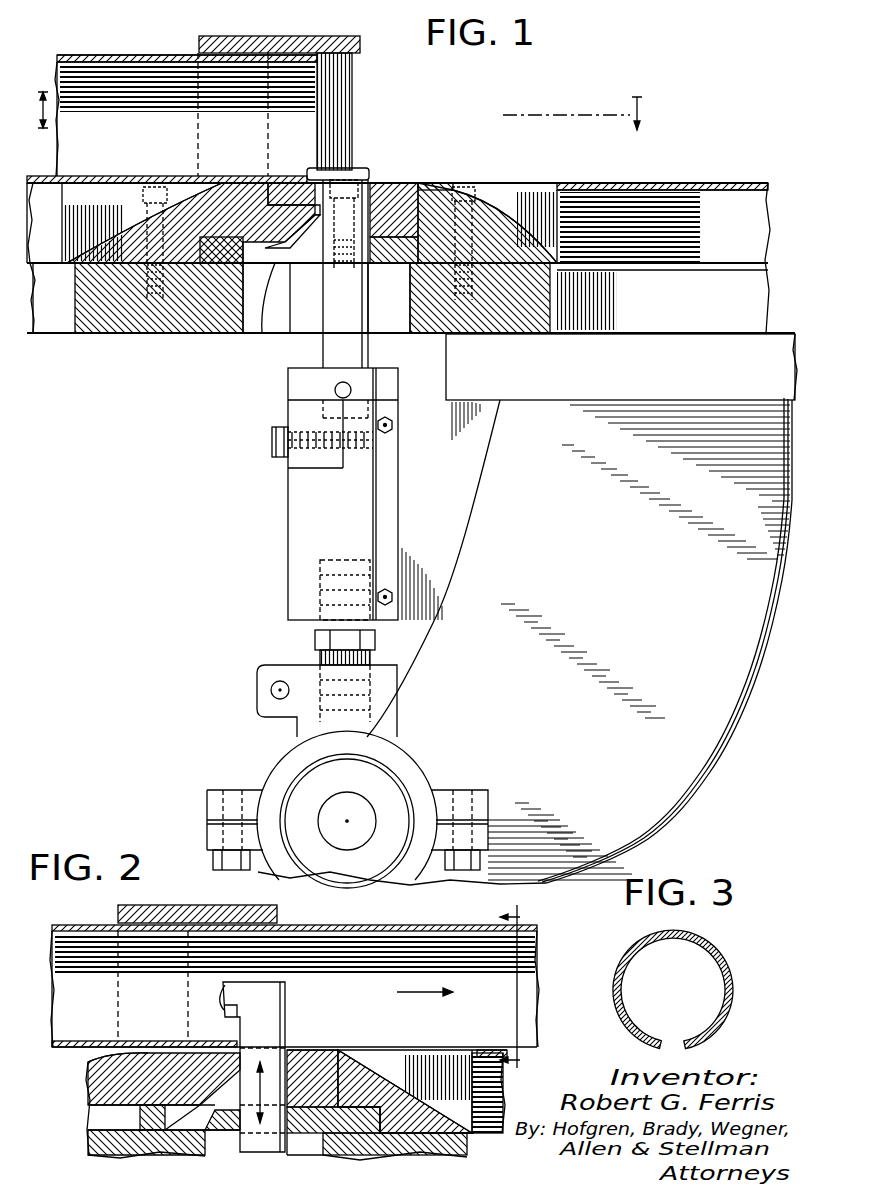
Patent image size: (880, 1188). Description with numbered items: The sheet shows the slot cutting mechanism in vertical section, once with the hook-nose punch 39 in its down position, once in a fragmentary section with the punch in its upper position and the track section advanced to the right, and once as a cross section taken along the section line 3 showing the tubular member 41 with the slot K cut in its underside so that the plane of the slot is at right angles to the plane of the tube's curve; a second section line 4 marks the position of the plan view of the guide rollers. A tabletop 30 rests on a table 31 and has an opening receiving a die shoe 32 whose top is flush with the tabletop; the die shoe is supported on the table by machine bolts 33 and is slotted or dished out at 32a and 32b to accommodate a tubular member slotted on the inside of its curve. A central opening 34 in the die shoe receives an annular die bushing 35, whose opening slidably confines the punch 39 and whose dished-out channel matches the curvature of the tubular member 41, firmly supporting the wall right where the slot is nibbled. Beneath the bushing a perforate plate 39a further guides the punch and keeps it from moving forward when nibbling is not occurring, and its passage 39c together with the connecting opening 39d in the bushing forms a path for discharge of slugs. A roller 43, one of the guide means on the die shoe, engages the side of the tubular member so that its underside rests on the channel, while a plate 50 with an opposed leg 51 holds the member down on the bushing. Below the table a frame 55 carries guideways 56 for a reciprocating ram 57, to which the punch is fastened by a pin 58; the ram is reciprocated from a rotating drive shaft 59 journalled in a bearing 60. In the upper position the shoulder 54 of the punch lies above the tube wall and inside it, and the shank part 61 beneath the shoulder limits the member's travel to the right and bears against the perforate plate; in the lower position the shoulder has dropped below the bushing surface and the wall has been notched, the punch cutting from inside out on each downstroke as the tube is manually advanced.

In FIG. 2, the section line 3— 3 is at (521, 988).
In FIG. 1, the section line for FIG. 4 is at (338, 111).
In FIG. 1, the tabletop 30 is at (648, 183).
In FIG. 1, the table 31 is at (703, 195).
In FIG. 1, the die shoe 32 is at (472, 190).
In FIG. 2, the die shoe 32 is at (105, 1095).
In FIG. 1, the dished-out portion of die shoe 32a is at (138, 222).
In FIG. 2, the dished-out portion of die shoe 32a is at (95, 1073).
In FIG. 1, the dished-out portion of die shoe 32b is at (490, 228).
In FIG. 2, the dished-out portion of die shoe 32b is at (400, 1085).
In FIG. 1, the machine bolts 33 is at (488, 180).
In FIG. 1, the central opening 34 is at (428, 180).
In FIG. 1, the die bushing 35 is at (388, 183).
In FIG. 2, the die bushing 35 is at (306, 1056).
In FIG. 1, the hook-nose punch 39 is at (365, 347).
In FIG. 2, the hook-nose punch 39 is at (288, 1020).
In FIG. 1, the perforate plate 39a is at (405, 270).
In FIG. 2, the perforate plate 39a is at (320, 1135).
In FIG. 1, the passage 39c is at (258, 332).
In FIG. 2, the passage 39c is at (205, 1140).
In FIG. 1, the connecting opening 39d is at (278, 228).
In FIG. 2, the connecting opening 39d is at (165, 1148).
In FIG. 1, the tubular member 41 is at (104, 55).
In FIG. 2, the tubular member 41 is at (346, 930).
In FIG. 3, the tubular member 41 is at (733, 978).
In FIG. 1, the roller 43 is at (352, 80).
In FIG. 1, the plate 50 is at (345, 37).
In FIG. 2, the plate 50 is at (255, 920).
In FIG. 1, the leg 51 is at (205, 80).
In FIG. 2, the leg 51 is at (118, 935).
In FIG. 1, the shoulder 54 is at (292, 231).
In FIG. 2, the shoulder 54 is at (216, 1010).
In FIG. 1, the frame 55 is at (702, 752).
In FIG. 1, the guideways 56 is at (390, 531).
In FIG. 1, the ram 57 is at (300, 548).
In FIG. 1, the pin 58 is at (335, 385).
In FIG. 1, the drive shaft 59 is at (353, 803).
In FIG. 1, the bearing 60 is at (420, 785).
In FIG. 2, the shank part 61 is at (233, 1025).
In FIG. 2, the slot K is at (478, 1047).
In FIG. 3, the slot K is at (672, 1043).